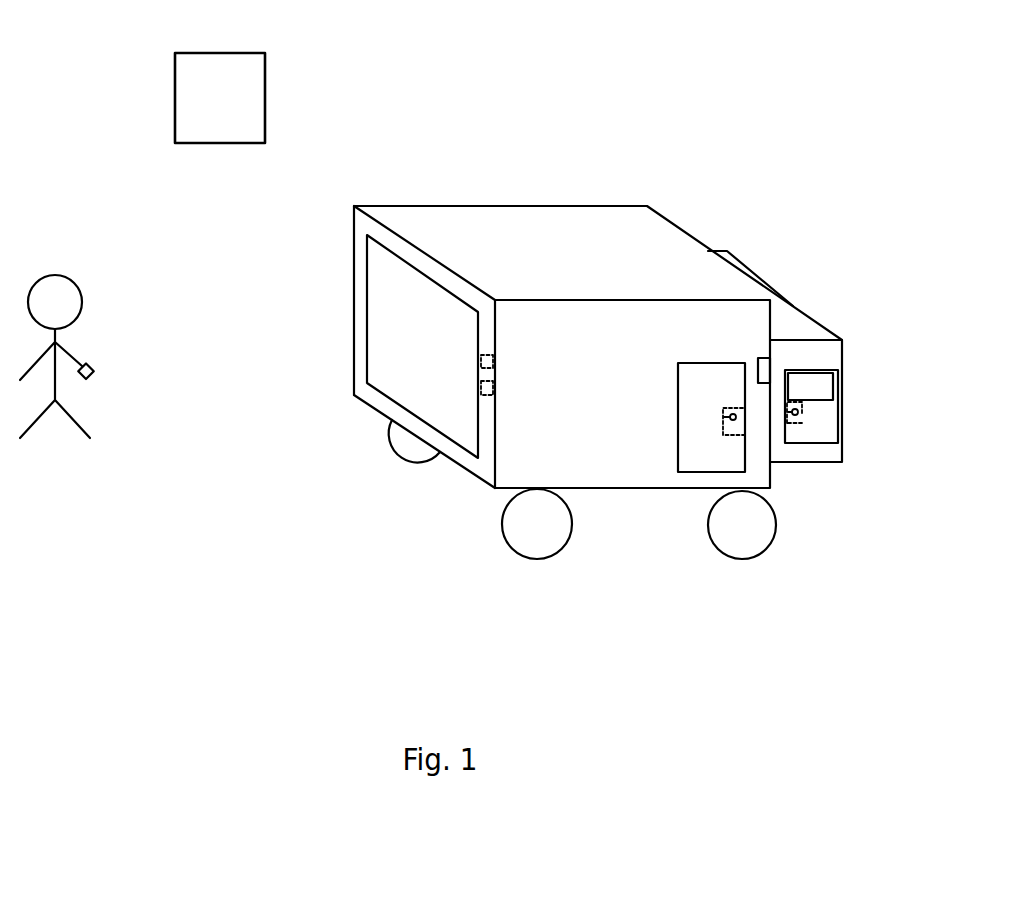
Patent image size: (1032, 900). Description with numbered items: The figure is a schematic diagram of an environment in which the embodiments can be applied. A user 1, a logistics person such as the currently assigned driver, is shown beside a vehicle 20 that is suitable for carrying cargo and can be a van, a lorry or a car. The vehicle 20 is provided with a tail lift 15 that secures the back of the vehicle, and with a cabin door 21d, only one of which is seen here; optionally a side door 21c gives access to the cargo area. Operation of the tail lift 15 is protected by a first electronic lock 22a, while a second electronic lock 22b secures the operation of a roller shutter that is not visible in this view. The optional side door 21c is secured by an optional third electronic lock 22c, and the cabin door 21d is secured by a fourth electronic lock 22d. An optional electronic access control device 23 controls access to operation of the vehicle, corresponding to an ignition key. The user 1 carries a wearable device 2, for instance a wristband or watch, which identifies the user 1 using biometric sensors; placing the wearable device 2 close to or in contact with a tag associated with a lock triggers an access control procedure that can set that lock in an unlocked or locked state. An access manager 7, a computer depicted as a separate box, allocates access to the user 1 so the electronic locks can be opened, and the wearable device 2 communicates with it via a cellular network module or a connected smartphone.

The user 1 is at (72, 277).
The wearable device 2 is at (95, 362).
The access manager 7 is at (266, 80).
The tail lift 15 is at (397, 322).
The vehicle 20 is at (648, 196).
The side door 21c is at (694, 422).
The cabin door 21d is at (812, 435).
The first electronic lock 22a is at (488, 398).
The second electronic lock 22b is at (486, 354).
The third electronic lock 22c is at (727, 436).
The fourth electronic lock 22d is at (793, 402).
The electronic access control device 23 is at (762, 358).